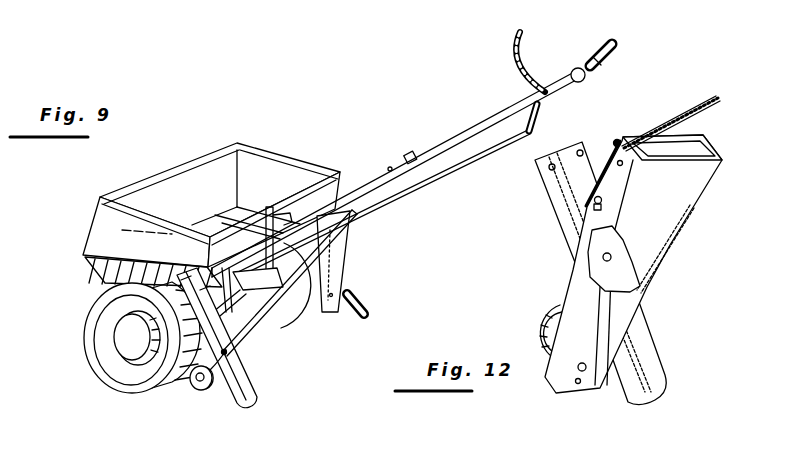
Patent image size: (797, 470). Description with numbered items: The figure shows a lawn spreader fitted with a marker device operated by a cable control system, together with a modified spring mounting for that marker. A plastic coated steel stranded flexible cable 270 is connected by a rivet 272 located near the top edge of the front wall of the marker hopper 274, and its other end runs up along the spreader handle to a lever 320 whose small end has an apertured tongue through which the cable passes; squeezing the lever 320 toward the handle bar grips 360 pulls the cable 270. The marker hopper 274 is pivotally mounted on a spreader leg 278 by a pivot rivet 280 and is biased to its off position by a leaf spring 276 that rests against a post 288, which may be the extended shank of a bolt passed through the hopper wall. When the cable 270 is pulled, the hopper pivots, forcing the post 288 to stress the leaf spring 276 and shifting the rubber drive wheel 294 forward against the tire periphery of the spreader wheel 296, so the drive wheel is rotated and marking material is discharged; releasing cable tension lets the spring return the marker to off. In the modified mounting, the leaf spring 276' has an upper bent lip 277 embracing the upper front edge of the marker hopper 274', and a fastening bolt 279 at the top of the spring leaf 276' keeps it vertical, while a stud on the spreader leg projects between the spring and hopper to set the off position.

In FIG. 9, the flexible cable 270 is at (455, 145).
In FIG. 12, the flexible cable 270 is at (696, 110).
In FIG. 9, the rivet 272 is at (280, 292).
In FIG. 9, the marker hopper 274 is at (317, 270).
In FIG. 12, the marker hopper 274' is at (633, 264).
In FIG. 9, the leaf spring 276 is at (290, 283).
In FIG. 12, the leaf spring 276' is at (596, 161).
In FIG. 12, the bent lip 277 is at (637, 152).
In FIG. 9, the spreader leg 278 is at (250, 352).
In FIG. 12, the spreader leg 278 is at (568, 208).
In FIG. 12, the fastening bolt 279 is at (616, 138).
In FIG. 12, the pivot rivet 280 is at (618, 262).
In FIG. 9, the post 288 is at (211, 215).
In FIG. 12, the post 288 is at (602, 199).
In FIG. 9, the rubber drive wheel 294 is at (198, 389).
In FIG. 9, the spreader wheel 296 is at (158, 390).
In FIG. 9, the lever 320 is at (573, 84).
In FIG. 9, the handle bar grips 360 is at (586, 77).